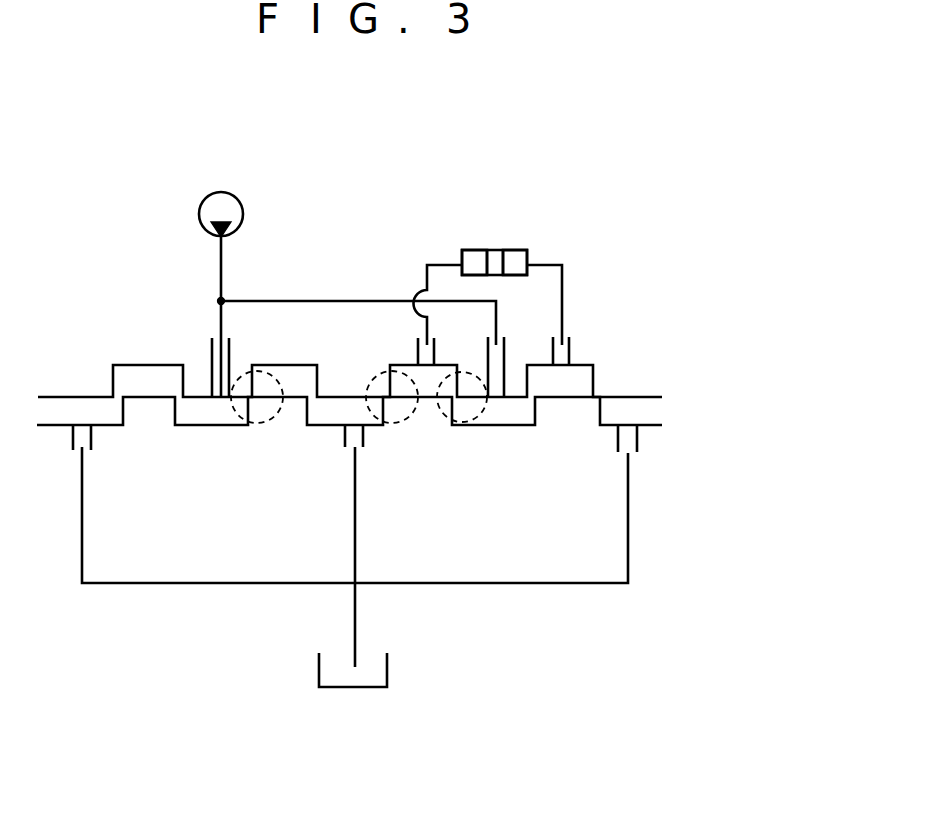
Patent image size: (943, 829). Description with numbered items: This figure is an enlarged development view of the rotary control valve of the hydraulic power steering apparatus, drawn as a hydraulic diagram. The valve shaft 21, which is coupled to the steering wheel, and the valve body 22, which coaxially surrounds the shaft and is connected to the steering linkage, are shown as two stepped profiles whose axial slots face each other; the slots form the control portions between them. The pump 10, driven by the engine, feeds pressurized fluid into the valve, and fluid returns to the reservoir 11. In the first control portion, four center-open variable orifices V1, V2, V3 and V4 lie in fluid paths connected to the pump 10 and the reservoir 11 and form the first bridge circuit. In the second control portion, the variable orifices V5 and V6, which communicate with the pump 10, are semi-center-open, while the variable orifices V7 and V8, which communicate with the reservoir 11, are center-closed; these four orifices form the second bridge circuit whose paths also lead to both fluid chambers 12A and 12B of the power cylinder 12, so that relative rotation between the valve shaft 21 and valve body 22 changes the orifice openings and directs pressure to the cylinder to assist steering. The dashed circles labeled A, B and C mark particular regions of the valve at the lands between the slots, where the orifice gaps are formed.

The pump 10 is at (234, 192).
The reservoir 11 is at (358, 688).
The power cylinder 12 is at (505, 250).
The fluid chamber 12A is at (477, 249).
The fluid chamber 12B is at (528, 250).
The valve shaft 21 is at (642, 433).
The valve body 22 is at (625, 388).
The portion A is at (257, 382).
The portion B is at (462, 386).
The portion C is at (392, 411).
The variable orifice V1 is at (187, 404).
The variable orifice V2 is at (252, 404).
The variable orifice V3 is at (122, 390).
The variable orifice V4 is at (306, 390).
The variable orifice V5 is at (459, 404).
The variable orifice V6 is at (527, 404).
The variable orifice V7 is at (400, 392).
The variable orifice V8 is at (585, 392).